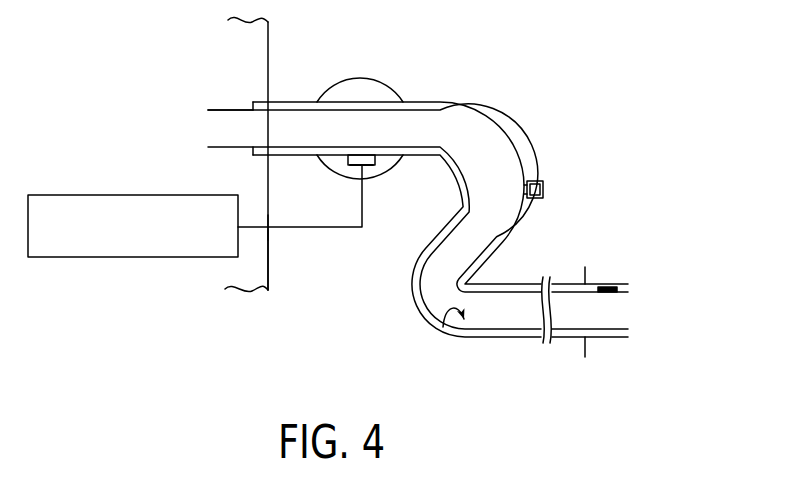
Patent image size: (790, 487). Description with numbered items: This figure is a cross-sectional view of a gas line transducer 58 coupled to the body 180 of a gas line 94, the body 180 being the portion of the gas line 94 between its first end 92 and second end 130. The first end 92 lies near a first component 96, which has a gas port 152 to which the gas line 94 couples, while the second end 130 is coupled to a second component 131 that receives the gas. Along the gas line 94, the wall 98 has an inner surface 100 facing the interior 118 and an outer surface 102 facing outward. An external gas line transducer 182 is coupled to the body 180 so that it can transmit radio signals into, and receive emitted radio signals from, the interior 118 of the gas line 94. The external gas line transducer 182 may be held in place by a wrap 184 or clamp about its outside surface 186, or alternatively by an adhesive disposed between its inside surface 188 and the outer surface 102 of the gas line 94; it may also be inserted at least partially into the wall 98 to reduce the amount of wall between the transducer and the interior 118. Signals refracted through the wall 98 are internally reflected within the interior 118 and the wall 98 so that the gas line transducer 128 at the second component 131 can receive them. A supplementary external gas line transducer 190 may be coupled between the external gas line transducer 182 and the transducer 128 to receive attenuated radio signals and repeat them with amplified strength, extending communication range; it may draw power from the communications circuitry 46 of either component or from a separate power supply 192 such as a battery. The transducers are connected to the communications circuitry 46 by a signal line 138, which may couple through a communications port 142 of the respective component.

The communications circuitry 46 is at (132, 195).
The gas line transducer 58 is at (530, 223).
The first end 92 is at (281, 89).
The gas line 94 is at (418, 240).
The first component 96 is at (270, 284).
The wall 98 is at (496, 128).
The inner surface 100 is at (440, 332).
The outer surface 102 is at (411, 301).
The interior 118 is at (440, 122).
The second gas line transducer 128 is at (608, 287).
The second end 130 is at (578, 345).
The second component 131 is at (584, 283).
The signal line 138 is at (362, 228).
The communications port 142 is at (279, 237).
The gas port 152 is at (230, 110).
The body 180 is at (493, 156).
The external gas line transducer 182 is at (377, 161).
The wrap 184 is at (350, 79).
The outside surface 186 is at (352, 169).
The inside surface 188 is at (364, 152).
The supplementary external gas line transducer 190 is at (532, 181).
The power supply 192 is at (544, 190).